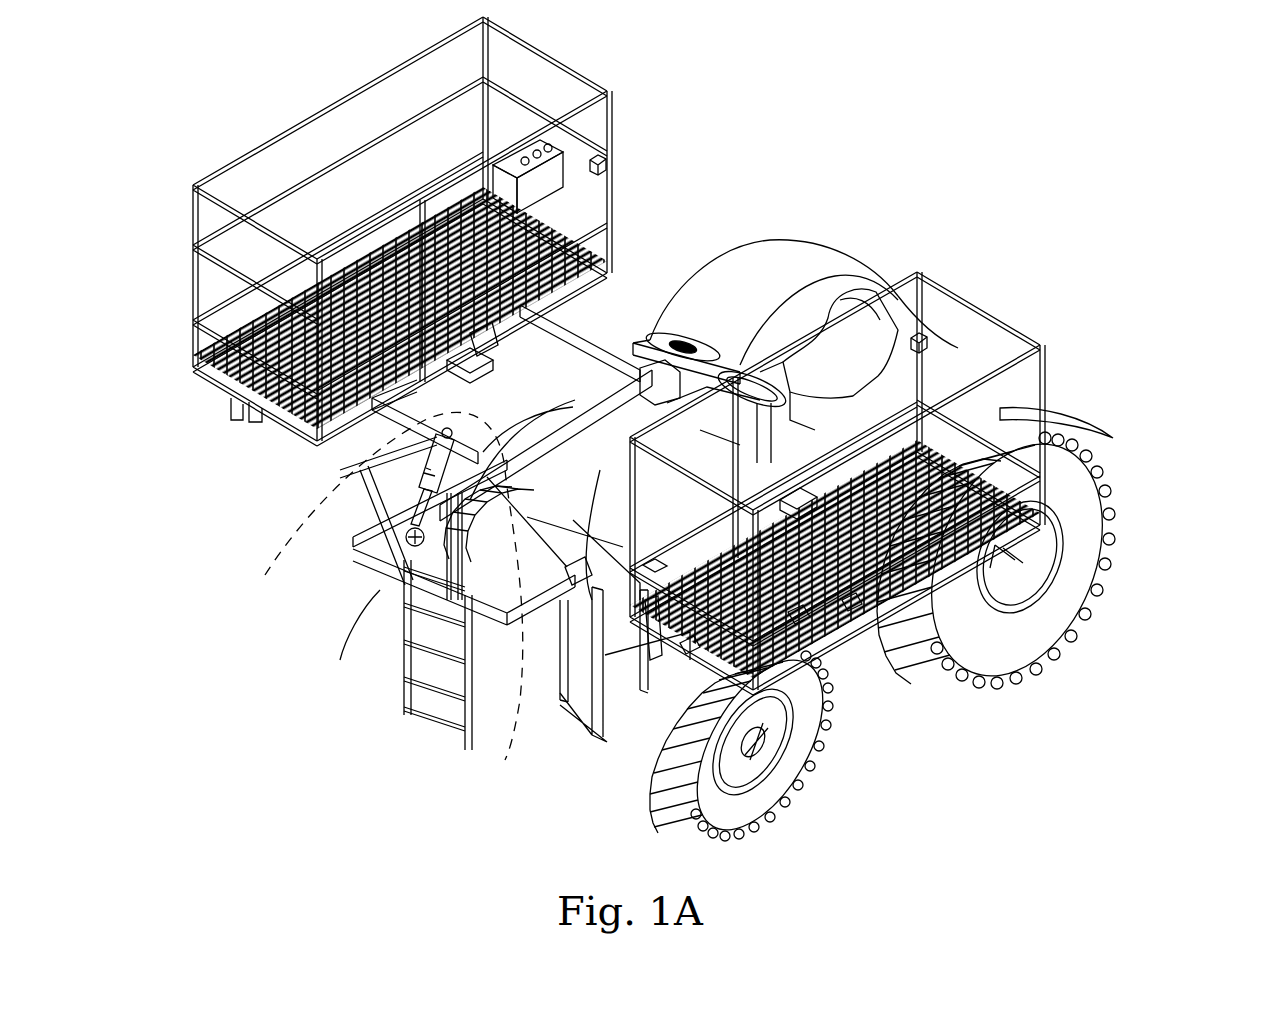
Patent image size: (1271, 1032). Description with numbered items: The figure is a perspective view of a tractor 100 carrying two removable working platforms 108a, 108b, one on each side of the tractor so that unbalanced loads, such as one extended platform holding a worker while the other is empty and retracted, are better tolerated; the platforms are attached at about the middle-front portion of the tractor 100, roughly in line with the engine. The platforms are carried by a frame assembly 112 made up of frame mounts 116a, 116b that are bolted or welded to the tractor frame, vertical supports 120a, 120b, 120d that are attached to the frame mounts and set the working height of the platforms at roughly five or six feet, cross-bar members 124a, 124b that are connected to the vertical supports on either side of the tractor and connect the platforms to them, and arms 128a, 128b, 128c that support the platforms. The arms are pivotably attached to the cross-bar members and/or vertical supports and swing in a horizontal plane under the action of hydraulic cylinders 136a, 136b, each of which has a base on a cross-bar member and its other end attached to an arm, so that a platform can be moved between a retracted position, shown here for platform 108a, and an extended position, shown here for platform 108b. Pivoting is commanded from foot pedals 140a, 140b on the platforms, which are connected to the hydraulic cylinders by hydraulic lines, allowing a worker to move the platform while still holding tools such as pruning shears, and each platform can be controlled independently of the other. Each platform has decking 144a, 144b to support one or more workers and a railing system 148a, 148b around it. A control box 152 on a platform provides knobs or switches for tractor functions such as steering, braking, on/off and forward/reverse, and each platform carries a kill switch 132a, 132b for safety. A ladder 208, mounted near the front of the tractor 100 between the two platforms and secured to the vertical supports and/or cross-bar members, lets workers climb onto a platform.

The tractor 100 is at (880, 80).
The platform 108a is at (945, 250).
The platform 108b is at (203, 150).
The frame assembly 112 is at (383, 816).
The frame mount 116a is at (590, 735).
The frame mount 116b is at (470, 735).
The vertical support 120a is at (660, 642).
The vertical support 120b is at (585, 325).
The vertical support 120d is at (602, 409).
The cross-bar member 124a is at (560, 700).
The cross-bar member 124b is at (400, 470).
The arm 128a is at (688, 648).
The arm 128b is at (375, 402).
The arm 128c is at (850, 605).
The kill switch 132a is at (922, 338).
The kill switch 132b is at (608, 165).
The hydraulic cylinder 136a is at (488, 406).
The hydraulic cylinder 136b is at (423, 477).
The foot pedal 140a is at (795, 620).
The foot pedal 140b is at (490, 352).
The decking 144a is at (1027, 550).
The decking 144b is at (240, 400).
The railing system 148a is at (1046, 348).
The railing system 148b is at (370, 84).
The control box 152 is at (565, 185).
The ladder 208 is at (400, 722).